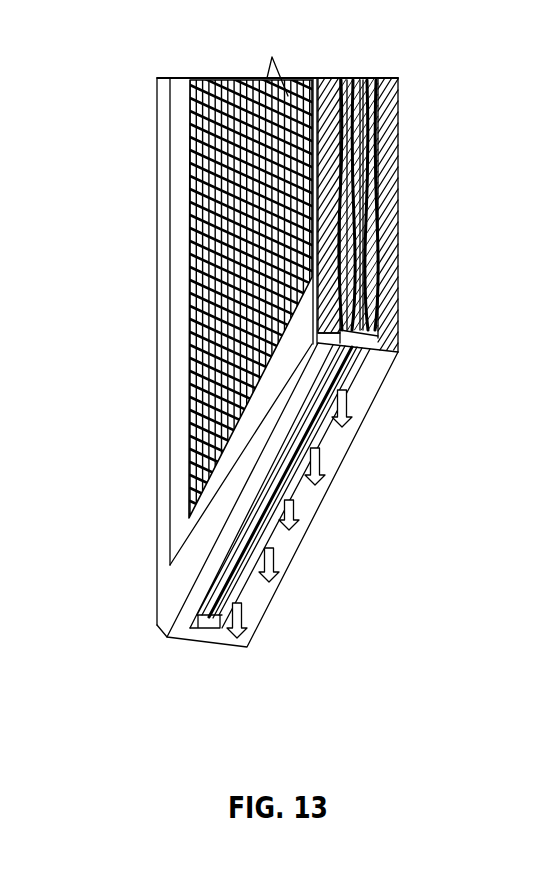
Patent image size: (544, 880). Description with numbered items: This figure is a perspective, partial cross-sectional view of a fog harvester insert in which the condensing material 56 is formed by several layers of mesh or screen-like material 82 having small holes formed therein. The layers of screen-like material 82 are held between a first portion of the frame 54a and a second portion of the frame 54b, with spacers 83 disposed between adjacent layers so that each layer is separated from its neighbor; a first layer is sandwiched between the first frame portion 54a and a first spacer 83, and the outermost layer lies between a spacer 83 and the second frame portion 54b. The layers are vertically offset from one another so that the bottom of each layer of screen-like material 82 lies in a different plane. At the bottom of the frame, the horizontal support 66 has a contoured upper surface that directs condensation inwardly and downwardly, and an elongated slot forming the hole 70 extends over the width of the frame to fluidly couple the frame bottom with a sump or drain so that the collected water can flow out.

The first portion of the frame 54a is at (325, 78).
The second portion of the frame 54b is at (399, 300).
The condensing material 56 is at (203, 195).
The horizontal support 66 is at (172, 587).
The hole 70 is at (325, 425).
The screen-like material 82 is at (237, 227).
The spacer 83 is at (372, 213).